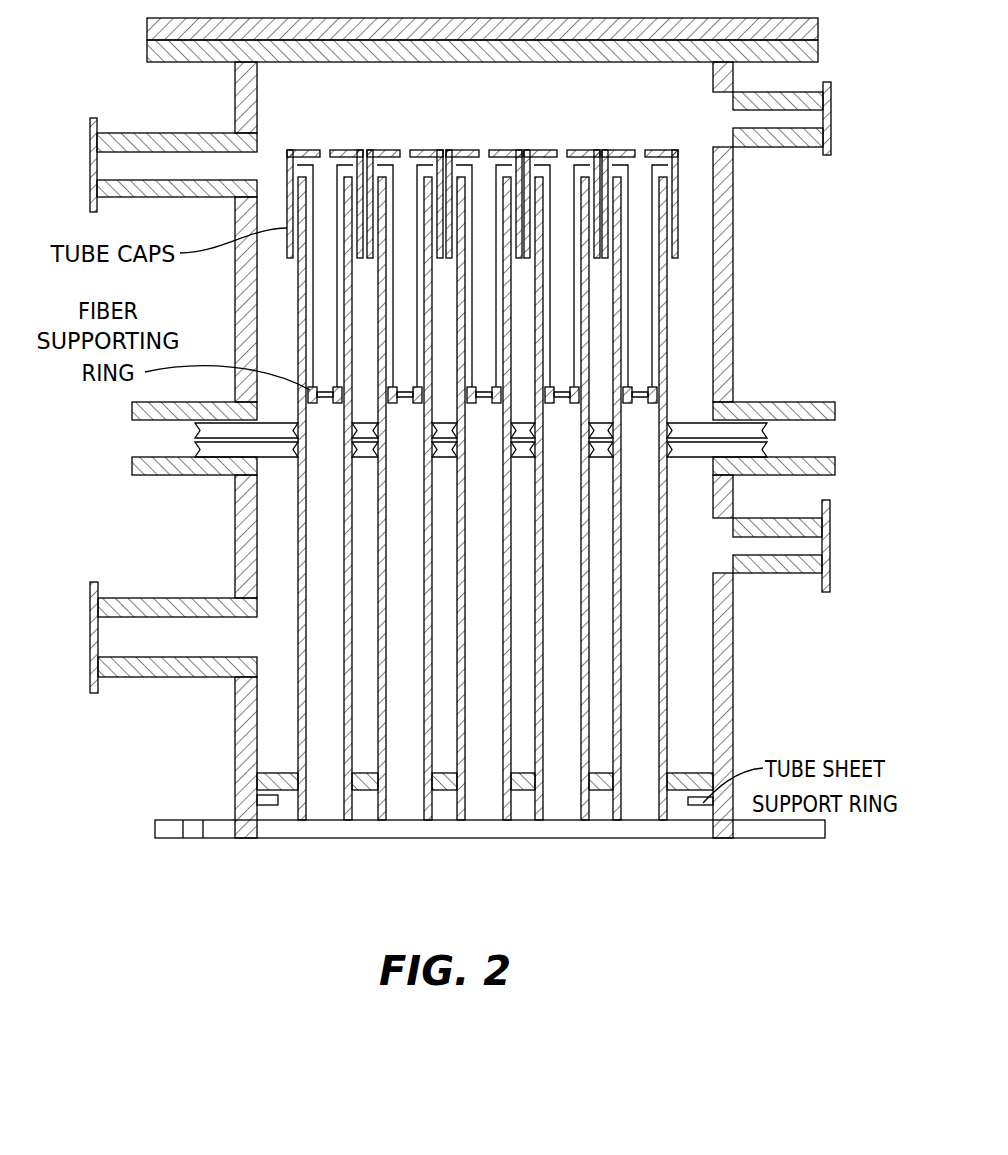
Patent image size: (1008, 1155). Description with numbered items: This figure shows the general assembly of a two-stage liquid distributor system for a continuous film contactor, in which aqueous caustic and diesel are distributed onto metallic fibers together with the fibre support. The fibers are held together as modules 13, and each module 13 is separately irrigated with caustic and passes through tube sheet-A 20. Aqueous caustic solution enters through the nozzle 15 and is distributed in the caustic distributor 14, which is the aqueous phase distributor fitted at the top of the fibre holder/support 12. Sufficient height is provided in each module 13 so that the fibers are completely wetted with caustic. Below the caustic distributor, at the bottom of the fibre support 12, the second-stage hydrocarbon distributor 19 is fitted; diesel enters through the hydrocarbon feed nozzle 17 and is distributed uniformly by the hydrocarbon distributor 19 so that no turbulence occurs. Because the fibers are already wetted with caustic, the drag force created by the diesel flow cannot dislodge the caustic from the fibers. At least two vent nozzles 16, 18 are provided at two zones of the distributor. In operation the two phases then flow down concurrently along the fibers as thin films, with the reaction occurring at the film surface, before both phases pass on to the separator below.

The fibre holder/support 12 is at (667, 305).
The module 13 is at (633, 540).
The caustic distributor 14 is at (575, 152).
The nozzle 15 is at (90, 157).
The vent nozzle 16 is at (831, 117).
The hydrocarbon feed nozzle 17 is at (90, 635).
The vent nozzle 18 is at (830, 532).
The hydrocarbon distributor 19 is at (703, 773).
The tube sheet-A 20 is at (697, 421).